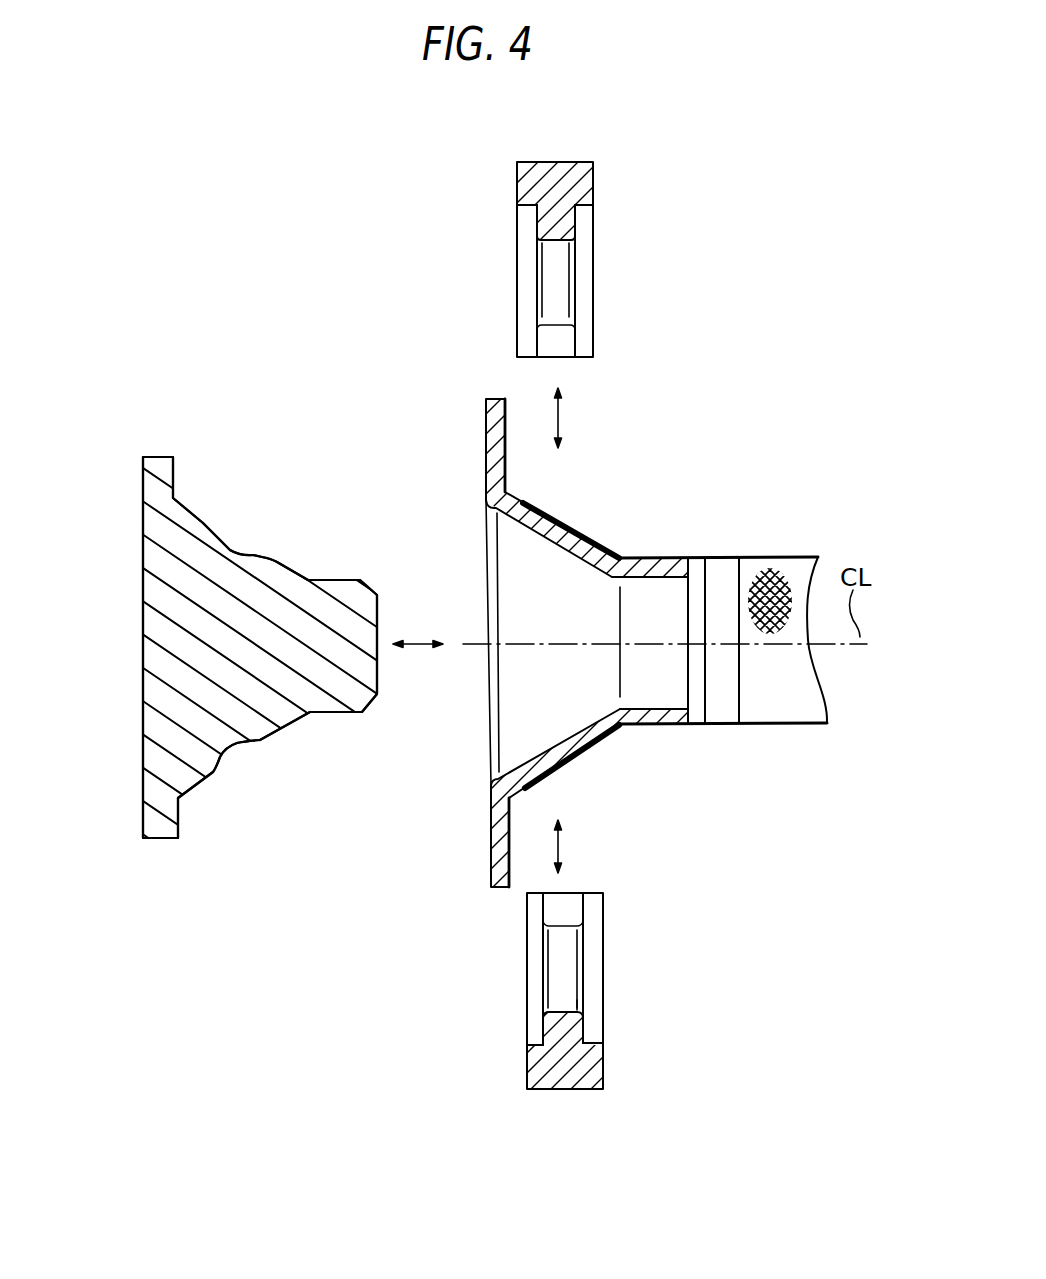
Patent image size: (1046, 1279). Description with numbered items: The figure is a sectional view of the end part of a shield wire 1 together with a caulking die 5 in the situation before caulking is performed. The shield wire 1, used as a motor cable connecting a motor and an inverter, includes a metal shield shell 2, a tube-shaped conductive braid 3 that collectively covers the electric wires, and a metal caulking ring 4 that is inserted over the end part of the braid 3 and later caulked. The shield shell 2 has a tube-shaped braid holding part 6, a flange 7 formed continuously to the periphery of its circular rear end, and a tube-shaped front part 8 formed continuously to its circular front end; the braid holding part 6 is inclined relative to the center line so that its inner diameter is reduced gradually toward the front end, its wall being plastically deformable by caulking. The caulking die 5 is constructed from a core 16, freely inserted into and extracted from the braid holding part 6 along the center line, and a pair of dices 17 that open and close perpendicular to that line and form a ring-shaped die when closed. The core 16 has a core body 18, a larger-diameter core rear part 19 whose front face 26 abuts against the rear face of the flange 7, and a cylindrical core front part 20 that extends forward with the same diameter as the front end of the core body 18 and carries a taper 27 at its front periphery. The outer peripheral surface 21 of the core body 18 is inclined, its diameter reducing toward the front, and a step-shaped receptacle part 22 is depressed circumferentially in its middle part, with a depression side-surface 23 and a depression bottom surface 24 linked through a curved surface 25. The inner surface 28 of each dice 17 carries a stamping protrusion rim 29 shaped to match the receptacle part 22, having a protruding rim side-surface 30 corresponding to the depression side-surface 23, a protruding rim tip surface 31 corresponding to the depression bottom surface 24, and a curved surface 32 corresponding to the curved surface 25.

The shield wire 1 is at (783, 467).
The shield shell 2 is at (486, 443).
The braid 3 is at (790, 556).
The caulking ring 4 is at (566, 512).
The caulking die 5 is at (225, 382).
The braid holding part 6 is at (563, 748).
The flange 7 is at (490, 877).
The front part 8 is at (657, 727).
The core 16 is at (136, 658).
The dices 17 is at (595, 190).
The core body 18 is at (241, 683).
The core rear part 19 is at (160, 823).
The core front part 20 is at (343, 677).
The outer peripheral surface 21 is at (277, 562).
The step-shaped receptacle part 22 is at (230, 550).
The depression side-surface 23 is at (227, 767).
The depression bottom surface 24 is at (253, 742).
The curved surface 25 is at (237, 743).
The front face 26 is at (176, 462).
The taper 27 is at (375, 592).
The inner surface 28 is at (585, 243).
The stamping protrusion rim 29 is at (562, 294).
The protruding rim side-surface 30 is at (543, 1018).
The protruding rim tip surface 31 is at (577, 1012).
The curved surface 32 is at (547, 1013).